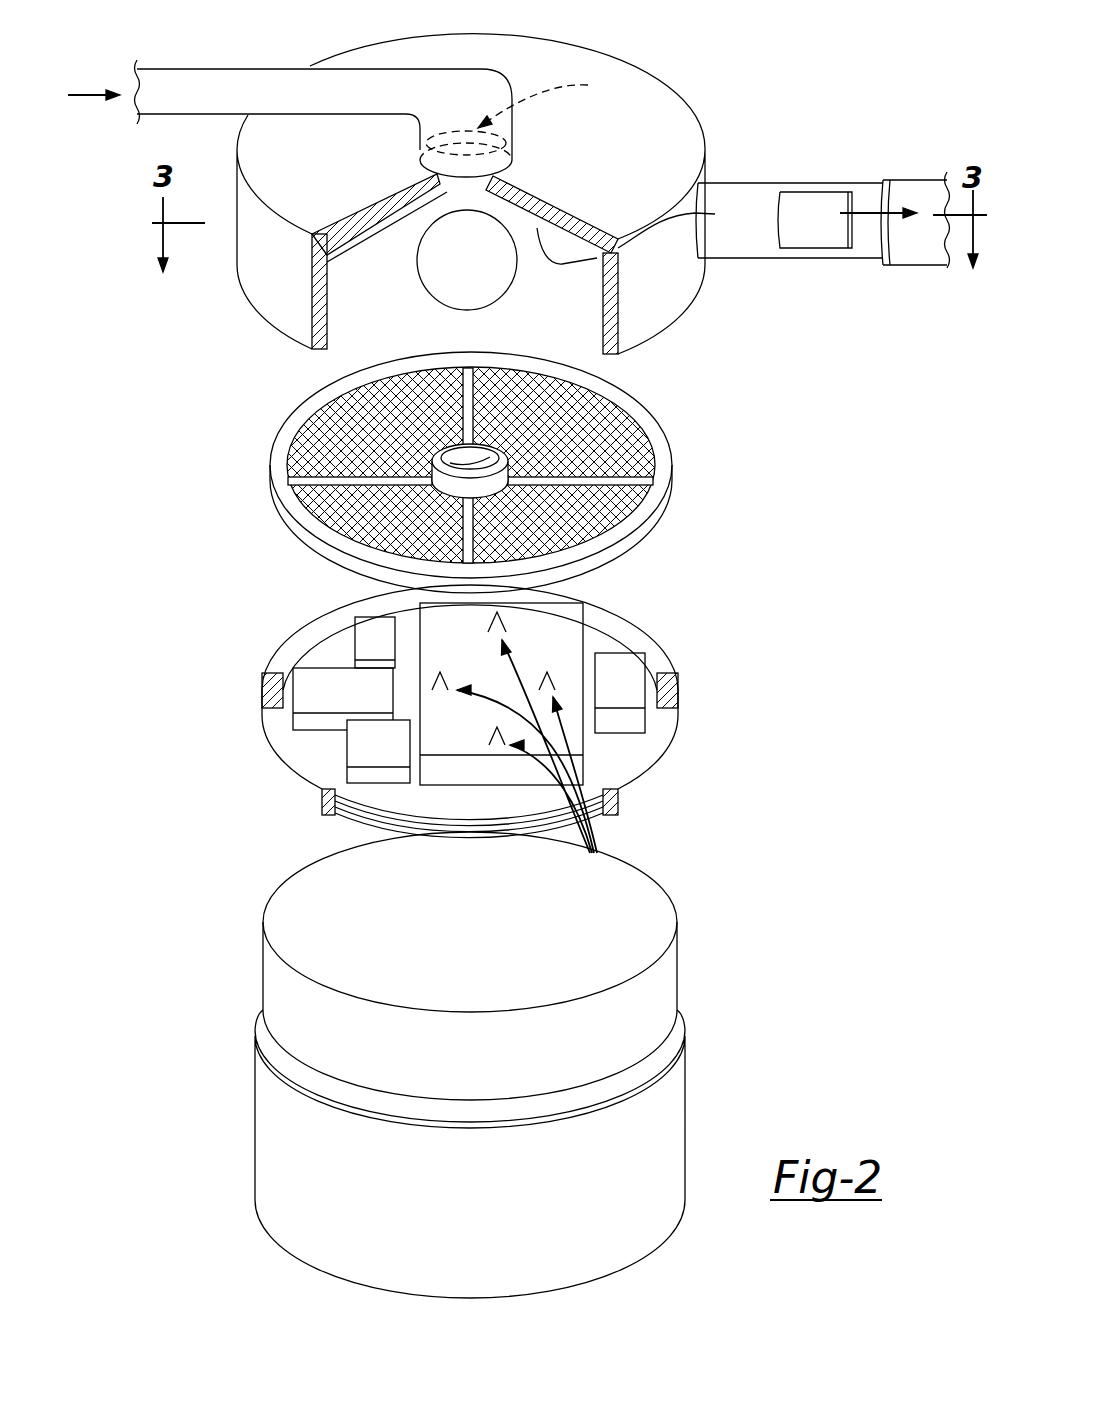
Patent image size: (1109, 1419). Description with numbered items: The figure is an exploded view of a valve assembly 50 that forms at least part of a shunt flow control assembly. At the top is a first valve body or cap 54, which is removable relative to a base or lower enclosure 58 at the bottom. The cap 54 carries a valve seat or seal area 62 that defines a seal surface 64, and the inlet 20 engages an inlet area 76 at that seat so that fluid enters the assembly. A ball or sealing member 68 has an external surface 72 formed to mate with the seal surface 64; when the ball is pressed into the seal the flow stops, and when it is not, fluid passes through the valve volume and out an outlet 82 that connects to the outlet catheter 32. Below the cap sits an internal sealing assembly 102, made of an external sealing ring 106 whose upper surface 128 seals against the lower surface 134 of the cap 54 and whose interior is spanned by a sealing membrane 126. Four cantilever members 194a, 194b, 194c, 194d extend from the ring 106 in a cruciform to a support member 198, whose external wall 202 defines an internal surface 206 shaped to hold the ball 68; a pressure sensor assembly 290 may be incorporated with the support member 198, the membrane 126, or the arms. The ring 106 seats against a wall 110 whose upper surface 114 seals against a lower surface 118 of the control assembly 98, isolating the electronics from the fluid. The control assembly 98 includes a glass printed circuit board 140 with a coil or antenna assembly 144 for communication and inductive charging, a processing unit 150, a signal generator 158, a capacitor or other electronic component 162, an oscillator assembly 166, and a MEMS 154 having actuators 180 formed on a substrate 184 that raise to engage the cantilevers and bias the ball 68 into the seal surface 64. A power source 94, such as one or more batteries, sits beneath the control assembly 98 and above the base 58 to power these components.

The inlet 20 is at (374, 88).
The outlet catheter 32 is at (894, 182).
The valve assembly 50 is at (743, 108).
The valve body 54 is at (468, 182).
The base 58 is at (687, 1095).
The valve seat 62 is at (484, 190).
The seal surface 64 is at (449, 130).
The ball 68 is at (391, 226).
The external surface 72 is at (462, 239).
The inlet area 76 is at (545, 99).
The outlet 82 is at (823, 195).
The power source 94 is at (645, 938).
The control assembly 98 is at (474, 705).
The internal sealing assembly 102 is at (476, 449).
The external sealing ring 106 is at (502, 464).
The wall 110 is at (502, 727).
The upper surface 114 is at (667, 670).
The lower surface 118 is at (663, 527).
The sealing membrane 126 is at (432, 433).
The upper surface 128 is at (277, 478).
The lower surface 134 is at (684, 227).
The printed circuit board 140 is at (635, 748).
The antenna assembly 144 is at (340, 814).
The processing unit 150 is at (310, 705).
The MEMS 154 is at (559, 705).
The signal generator 158 is at (365, 648).
The capacitor 162 is at (360, 752).
The oscillator assembly 166 is at (640, 697).
The actuators 180 is at (538, 761).
The substrate 184 is at (451, 740).
The cantilever member 194a is at (318, 498).
The cantilever member 194b is at (466, 522).
The cantilever member 194c is at (625, 495).
The cantilever member 194d is at (472, 413).
The support member 198 is at (483, 474).
The external wall 202 is at (512, 470).
The internal surface 206 is at (468, 457).
The pressure sensor assembly 290 is at (331, 433).